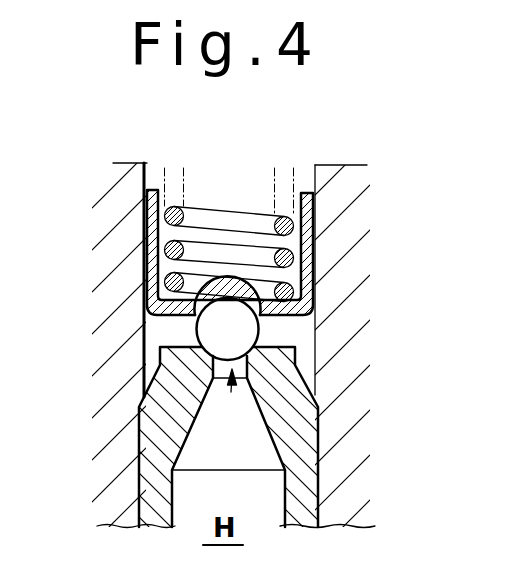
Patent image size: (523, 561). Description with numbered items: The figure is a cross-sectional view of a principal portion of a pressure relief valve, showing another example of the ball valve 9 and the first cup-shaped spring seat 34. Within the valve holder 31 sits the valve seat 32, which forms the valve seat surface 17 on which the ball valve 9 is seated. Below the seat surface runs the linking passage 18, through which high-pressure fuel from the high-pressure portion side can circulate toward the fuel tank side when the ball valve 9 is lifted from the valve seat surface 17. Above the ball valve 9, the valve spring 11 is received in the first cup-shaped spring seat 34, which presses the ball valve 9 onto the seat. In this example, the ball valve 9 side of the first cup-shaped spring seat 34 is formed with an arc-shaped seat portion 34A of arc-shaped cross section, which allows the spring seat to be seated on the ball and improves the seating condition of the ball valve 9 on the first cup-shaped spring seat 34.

The ball valve 9 is at (248, 327).
The valve spring 11 is at (174, 205).
The valve seat surface 17 is at (213, 350).
The linking passage 18 is at (231, 392).
The valve holder 31 is at (337, 447).
The valve seat 32 is at (293, 478).
The first cup-shaped spring seat 34 is at (315, 213).
The arc-shaped seat portion 34A is at (227, 287).